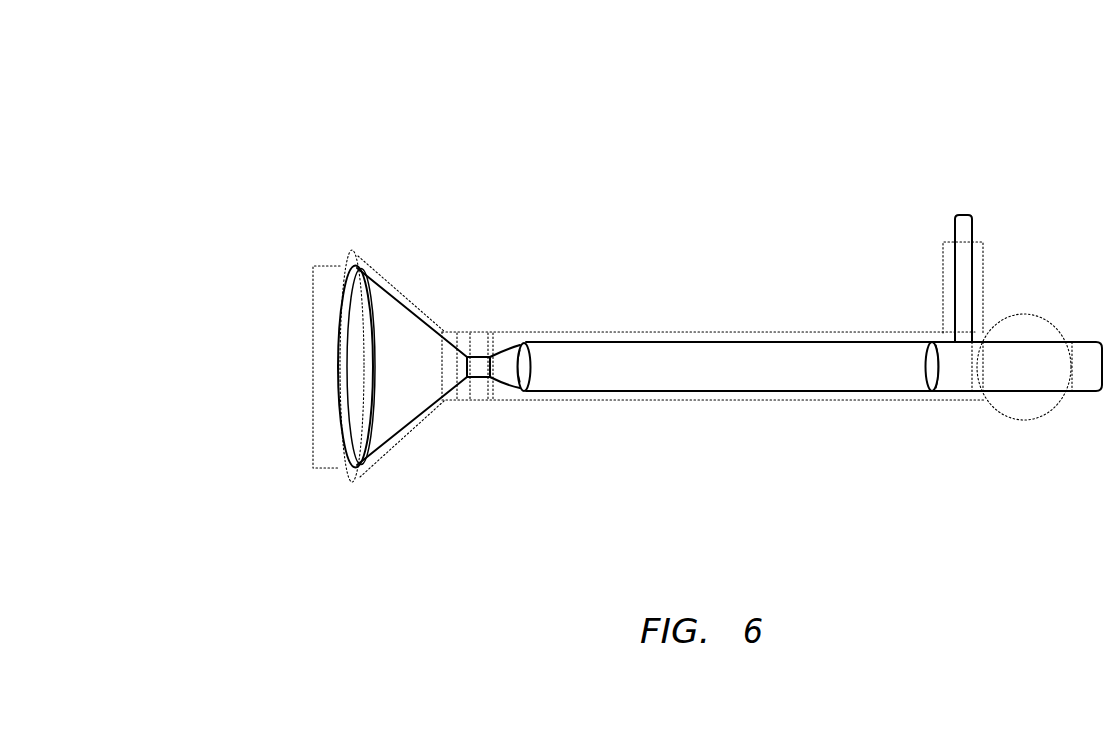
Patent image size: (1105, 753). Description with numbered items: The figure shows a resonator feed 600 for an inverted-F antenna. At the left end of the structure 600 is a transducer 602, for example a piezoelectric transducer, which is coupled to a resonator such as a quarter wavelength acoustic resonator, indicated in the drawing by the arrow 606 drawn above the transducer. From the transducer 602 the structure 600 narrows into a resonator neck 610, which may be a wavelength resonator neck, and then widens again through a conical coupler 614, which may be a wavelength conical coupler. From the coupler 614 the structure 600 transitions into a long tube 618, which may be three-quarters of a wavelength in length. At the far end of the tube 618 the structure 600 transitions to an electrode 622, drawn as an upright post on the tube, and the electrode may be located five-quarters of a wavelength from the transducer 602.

The resonator feed 600 is at (930, 113).
The transducer 602 is at (313, 383).
The arrow indicating quarter wavelength acoustic resonator 606 is at (365, 223).
The resonator neck 610 is at (475, 373).
The conical coupler 614 is at (521, 343).
The tube 618 is at (568, 392).
The electrode 622 is at (963, 230).